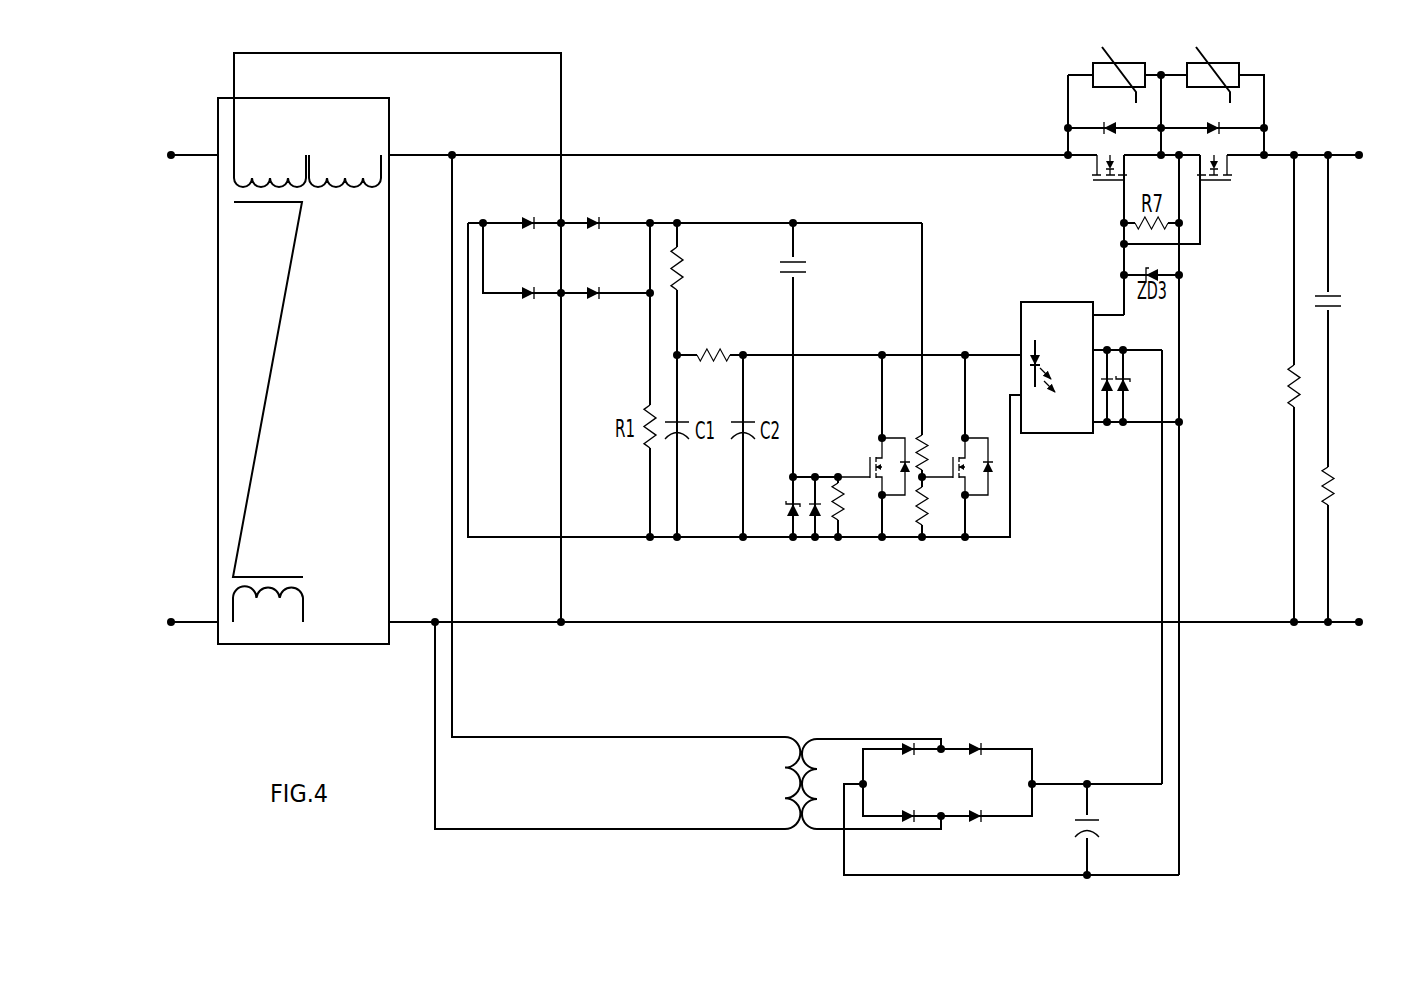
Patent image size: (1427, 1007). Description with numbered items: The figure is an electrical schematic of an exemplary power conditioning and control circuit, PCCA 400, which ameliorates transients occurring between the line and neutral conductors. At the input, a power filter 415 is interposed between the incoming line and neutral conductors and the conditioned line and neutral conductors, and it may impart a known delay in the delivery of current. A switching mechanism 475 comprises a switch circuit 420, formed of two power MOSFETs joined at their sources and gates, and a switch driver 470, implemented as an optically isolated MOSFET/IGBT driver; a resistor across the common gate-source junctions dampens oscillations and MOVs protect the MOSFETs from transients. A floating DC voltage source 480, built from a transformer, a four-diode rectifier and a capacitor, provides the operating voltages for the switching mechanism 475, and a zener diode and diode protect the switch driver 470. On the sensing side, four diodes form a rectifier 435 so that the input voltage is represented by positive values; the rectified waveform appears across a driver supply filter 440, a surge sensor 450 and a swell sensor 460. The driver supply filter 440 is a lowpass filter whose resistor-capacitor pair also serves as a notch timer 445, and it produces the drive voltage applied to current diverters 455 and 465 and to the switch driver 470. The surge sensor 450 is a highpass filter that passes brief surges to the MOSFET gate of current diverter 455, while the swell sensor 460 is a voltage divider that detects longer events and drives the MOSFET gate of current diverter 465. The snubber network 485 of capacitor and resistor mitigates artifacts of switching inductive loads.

The PCCA 400 is at (740, 133).
The power filter 415 is at (218, 372).
The switch circuit 420 is at (1037, 122).
The rectifier 435 is at (584, 215).
The driver supply filter 440 is at (725, 255).
The notch timer 445 is at (737, 326).
The surge sensor 450 is at (850, 258).
The current diverter 455 is at (858, 547).
The swell sensor 460 is at (937, 413).
The current diverter 465 is at (940, 547).
The switch driver 470 is at (1043, 300).
The switching mechanism 475 is at (1203, 393).
The floating DC voltage source 480 is at (837, 699).
The output network (R8, R9, C4) 485 is at (1355, 385).